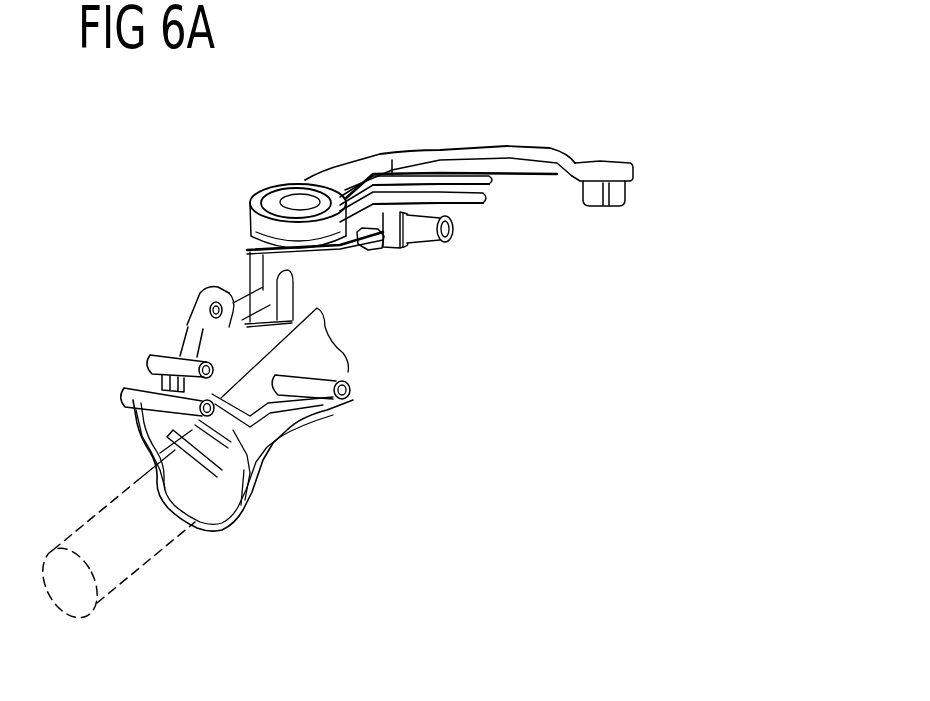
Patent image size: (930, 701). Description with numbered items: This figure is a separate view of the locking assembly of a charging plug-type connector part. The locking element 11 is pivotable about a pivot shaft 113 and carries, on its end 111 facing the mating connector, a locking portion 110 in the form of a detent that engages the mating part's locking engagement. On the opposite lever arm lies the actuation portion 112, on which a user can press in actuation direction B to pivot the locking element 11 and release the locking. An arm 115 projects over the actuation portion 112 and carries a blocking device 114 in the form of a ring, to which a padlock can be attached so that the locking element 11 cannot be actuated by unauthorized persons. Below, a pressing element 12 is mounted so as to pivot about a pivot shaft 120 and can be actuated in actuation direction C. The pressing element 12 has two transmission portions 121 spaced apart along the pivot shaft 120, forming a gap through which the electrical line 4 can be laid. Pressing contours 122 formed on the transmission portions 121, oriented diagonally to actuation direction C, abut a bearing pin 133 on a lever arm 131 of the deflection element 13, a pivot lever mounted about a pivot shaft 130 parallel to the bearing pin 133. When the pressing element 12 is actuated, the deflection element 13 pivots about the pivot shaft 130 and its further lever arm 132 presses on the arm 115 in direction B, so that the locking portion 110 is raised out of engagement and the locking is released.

The electrical line 4 is at (117, 578).
The locking element 11 is at (505, 156).
The pressing element 12 is at (263, 460).
The deflection element 13 is at (152, 344).
The locking portion 110 is at (613, 195).
The end 111 is at (615, 160).
The actuation portion 112 is at (327, 185).
The pivot shaft 113 is at (448, 247).
The blocking device 114 is at (372, 248).
The arm 115 is at (292, 325).
The pivot shaft 120 is at (350, 393).
The transmission portions 121 is at (227, 447).
The pressing contours 122 is at (132, 435).
The pivot shaft 130 is at (149, 359).
The lever arm 131 is at (162, 381).
The lever arm 132 is at (183, 352).
The bearing pin 133 is at (133, 403).
The actuation direction B is at (276, 176).
The actuation direction C is at (289, 454).